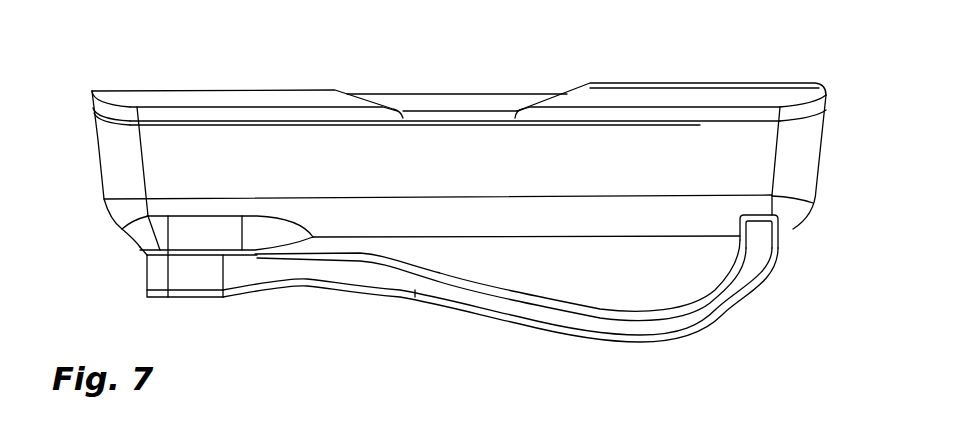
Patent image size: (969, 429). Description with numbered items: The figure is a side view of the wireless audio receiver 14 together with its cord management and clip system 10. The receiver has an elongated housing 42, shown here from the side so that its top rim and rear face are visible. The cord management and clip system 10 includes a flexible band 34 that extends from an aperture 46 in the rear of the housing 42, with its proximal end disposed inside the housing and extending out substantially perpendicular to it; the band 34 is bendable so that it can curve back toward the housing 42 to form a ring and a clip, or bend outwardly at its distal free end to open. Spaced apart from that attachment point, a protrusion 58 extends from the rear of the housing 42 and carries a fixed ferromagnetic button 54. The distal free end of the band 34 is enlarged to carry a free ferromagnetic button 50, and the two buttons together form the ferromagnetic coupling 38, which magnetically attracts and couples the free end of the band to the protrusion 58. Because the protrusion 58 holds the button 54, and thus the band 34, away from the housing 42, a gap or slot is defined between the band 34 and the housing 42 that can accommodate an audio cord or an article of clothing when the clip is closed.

The cord management and clip system 10 is at (770, 333).
The wireless audio receiver 14 is at (260, 56).
The housing 42 is at (671, 82).
The protrusion 58 is at (220, 230).
The fixed ferromagnetic button 54 is at (192, 230).
The ferromagnetic coupling 38 is at (142, 258).
The free ferromagnetic button 50 is at (193, 280).
The flexible band 34 is at (520, 310).
The aperture 46 is at (780, 233).